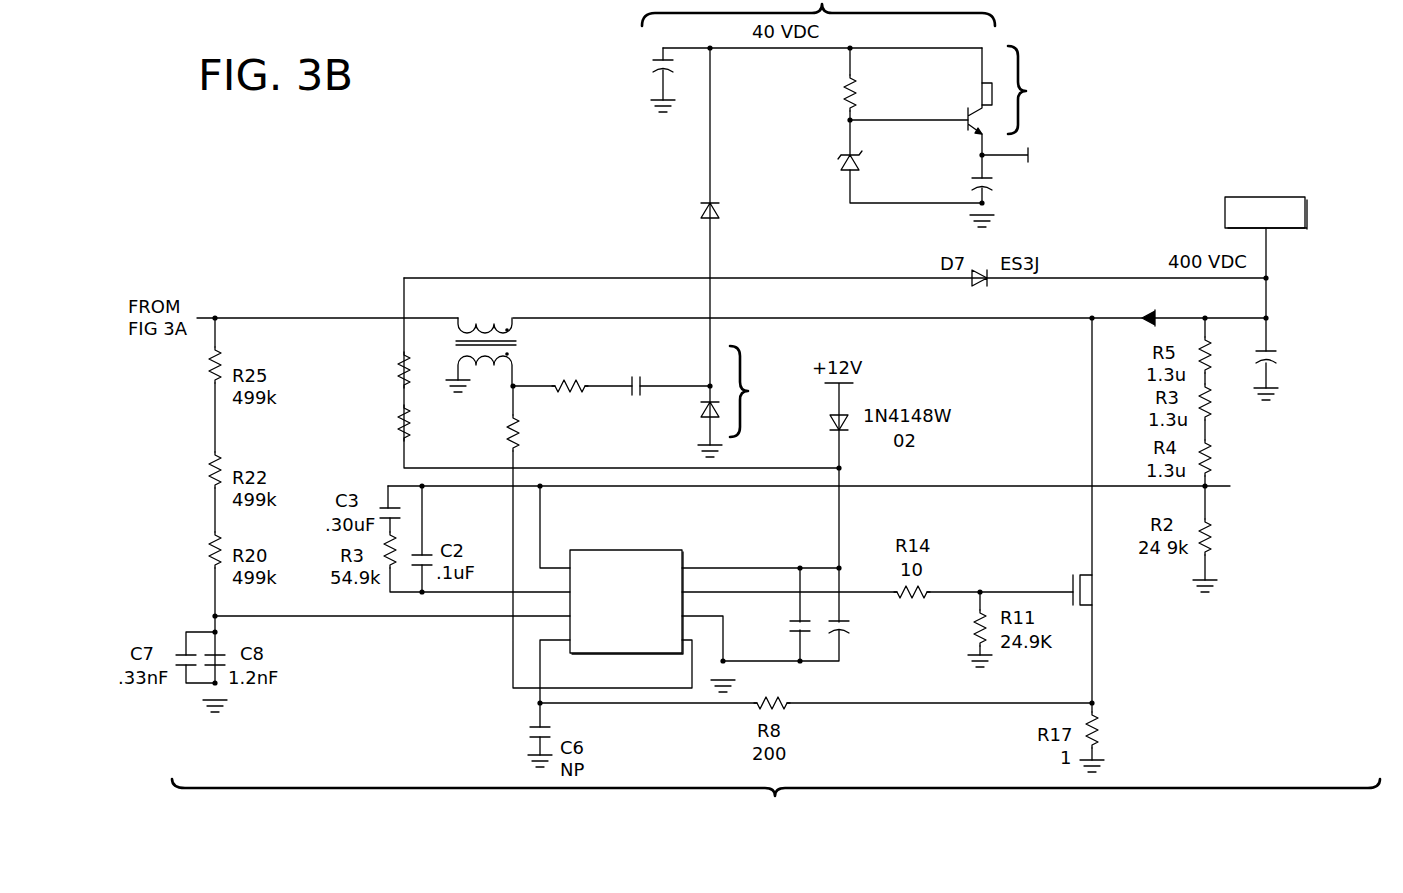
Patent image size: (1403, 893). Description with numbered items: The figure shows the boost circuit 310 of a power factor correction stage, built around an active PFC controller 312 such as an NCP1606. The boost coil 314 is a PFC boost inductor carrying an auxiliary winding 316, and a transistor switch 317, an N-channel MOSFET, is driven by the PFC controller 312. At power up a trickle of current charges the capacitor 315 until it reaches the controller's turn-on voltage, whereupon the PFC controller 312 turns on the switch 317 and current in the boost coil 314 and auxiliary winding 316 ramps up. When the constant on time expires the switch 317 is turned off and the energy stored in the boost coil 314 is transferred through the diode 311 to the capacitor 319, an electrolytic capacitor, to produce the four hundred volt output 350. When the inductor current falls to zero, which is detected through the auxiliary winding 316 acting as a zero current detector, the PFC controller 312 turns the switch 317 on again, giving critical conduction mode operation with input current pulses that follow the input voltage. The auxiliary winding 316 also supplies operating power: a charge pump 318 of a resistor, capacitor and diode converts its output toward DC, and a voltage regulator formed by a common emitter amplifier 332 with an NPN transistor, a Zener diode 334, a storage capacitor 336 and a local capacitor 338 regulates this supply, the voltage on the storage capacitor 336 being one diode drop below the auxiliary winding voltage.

The boost circuit 310 is at (776, 804).
The diode 311 is at (1147, 306).
The PFC controller 312 is at (565, 648).
The boost coil 314 is at (458, 320).
The capacitor 315 is at (843, 660).
The auxiliary winding 316 is at (517, 383).
The transistor switch 317 is at (1093, 622).
The charge pump 318 is at (656, 397).
The capacitor 319 is at (1272, 336).
The common emitter amplifier 332 is at (942, 124).
The Zener diode 334 is at (845, 178).
The storage capacitor 336 is at (660, 66).
The local capacitor 338 is at (987, 192).
The 400 V output 350 is at (1240, 198).